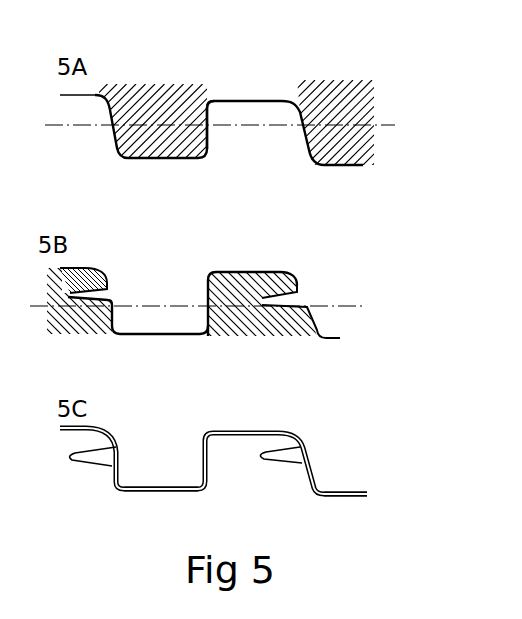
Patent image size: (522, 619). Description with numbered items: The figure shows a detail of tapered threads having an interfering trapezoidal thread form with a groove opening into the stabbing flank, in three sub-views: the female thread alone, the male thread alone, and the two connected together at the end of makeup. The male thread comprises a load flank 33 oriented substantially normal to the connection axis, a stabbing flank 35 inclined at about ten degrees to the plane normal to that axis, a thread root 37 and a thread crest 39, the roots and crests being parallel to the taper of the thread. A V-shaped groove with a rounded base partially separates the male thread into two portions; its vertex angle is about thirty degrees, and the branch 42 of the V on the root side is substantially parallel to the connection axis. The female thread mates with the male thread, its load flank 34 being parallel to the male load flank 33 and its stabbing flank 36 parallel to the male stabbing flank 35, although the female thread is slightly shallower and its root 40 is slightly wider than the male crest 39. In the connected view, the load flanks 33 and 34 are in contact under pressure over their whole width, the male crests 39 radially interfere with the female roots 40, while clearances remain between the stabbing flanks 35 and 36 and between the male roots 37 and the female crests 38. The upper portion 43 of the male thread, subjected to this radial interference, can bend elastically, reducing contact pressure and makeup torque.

The load flank 33 is at (206, 299).
The load flank 34 is at (213, 143).
The stabbing flank 35 is at (304, 307).
The stabbing flank 36 is at (300, 157).
The thread root 37 is at (158, 334).
The thread crest 38 is at (177, 160).
The thread crest 39 is at (73, 267).
The thread root 40 is at (79, 97).
The branch of the V 42 is at (282, 465).
The upper portion of male thread 43 is at (283, 433).